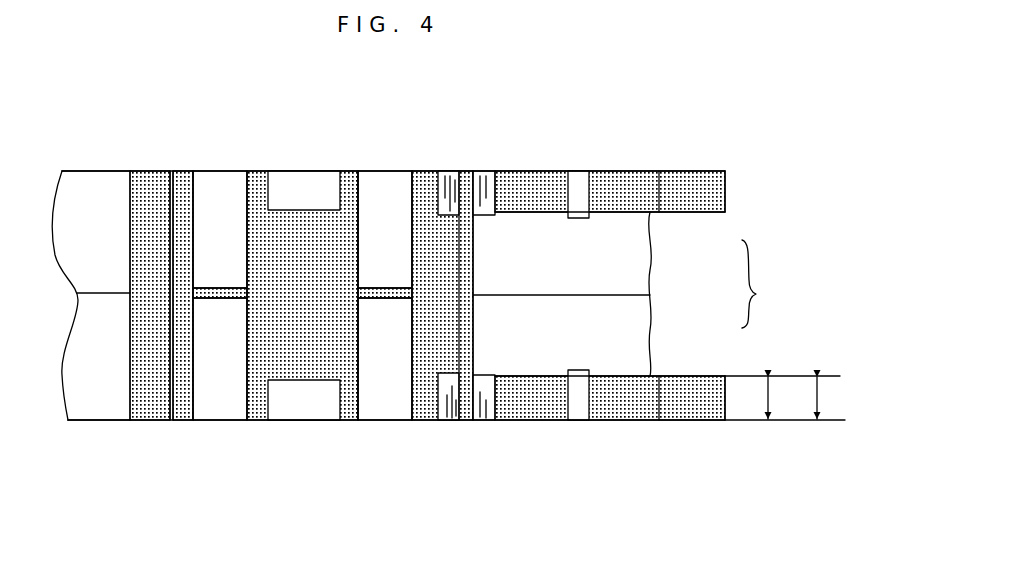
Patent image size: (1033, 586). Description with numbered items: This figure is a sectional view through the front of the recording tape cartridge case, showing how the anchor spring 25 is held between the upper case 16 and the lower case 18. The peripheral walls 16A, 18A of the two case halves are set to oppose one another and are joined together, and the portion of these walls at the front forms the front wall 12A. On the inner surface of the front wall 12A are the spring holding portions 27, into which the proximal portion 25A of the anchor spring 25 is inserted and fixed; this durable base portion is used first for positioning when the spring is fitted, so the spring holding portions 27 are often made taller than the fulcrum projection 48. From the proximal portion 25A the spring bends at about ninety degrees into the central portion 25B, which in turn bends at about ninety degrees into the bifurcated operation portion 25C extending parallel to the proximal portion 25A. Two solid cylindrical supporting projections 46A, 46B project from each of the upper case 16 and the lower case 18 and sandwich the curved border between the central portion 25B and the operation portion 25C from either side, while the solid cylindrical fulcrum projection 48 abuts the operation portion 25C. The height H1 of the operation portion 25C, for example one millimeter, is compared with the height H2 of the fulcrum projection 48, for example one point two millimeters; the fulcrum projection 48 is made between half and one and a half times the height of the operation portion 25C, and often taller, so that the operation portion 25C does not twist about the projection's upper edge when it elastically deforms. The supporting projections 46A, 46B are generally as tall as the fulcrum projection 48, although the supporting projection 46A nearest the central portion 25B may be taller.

The upper case 16 is at (94, 192).
The lower case 18 is at (98, 400).
The spring holding portions 27 is at (225, 182).
The proximal portion 25A is at (258, 404).
The central portion 25B is at (466, 305).
The operation portion 25C is at (633, 179).
The anchor spring 25 is at (705, 408).
The supporting projection 46A is at (450, 186).
The supporting projection 46B is at (481, 187).
The fulcrum projection 48 is at (577, 182).
The peripheral wall 16A is at (643, 258).
The peripheral wall 18A is at (638, 337).
The front wall 12A is at (772, 284).
The height of the operation portion H1 is at (768, 400).
The height of the fulcrum projection H2 is at (817, 400).